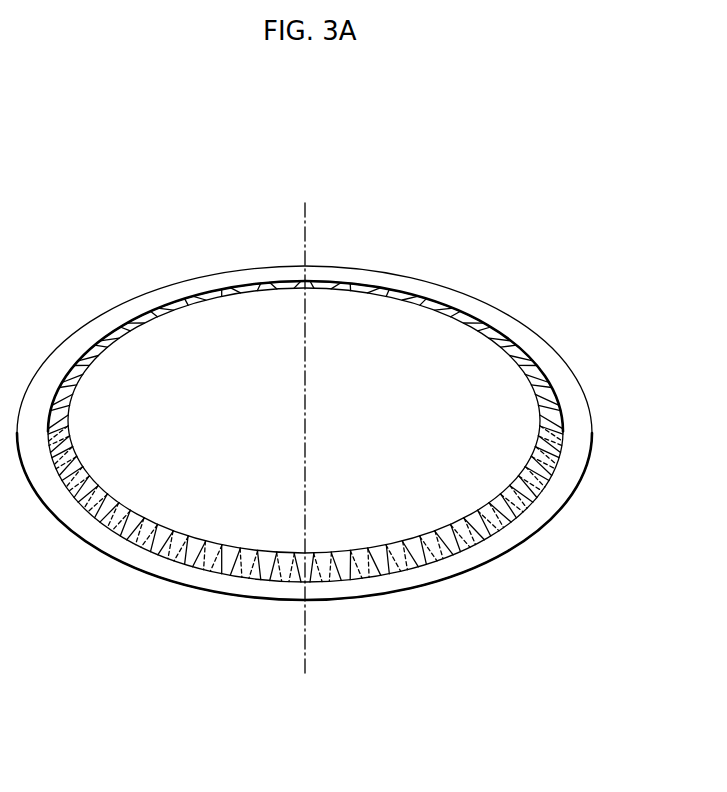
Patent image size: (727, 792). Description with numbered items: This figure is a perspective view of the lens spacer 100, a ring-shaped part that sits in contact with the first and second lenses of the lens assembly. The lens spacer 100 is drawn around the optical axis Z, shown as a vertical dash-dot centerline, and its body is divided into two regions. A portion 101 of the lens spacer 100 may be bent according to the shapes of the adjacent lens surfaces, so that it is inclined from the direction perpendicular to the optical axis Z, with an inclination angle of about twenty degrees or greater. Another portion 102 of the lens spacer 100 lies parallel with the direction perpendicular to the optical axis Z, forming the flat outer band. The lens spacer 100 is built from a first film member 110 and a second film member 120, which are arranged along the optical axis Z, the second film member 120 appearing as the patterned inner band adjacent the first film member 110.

The lens spacer 100 is at (548, 243).
The portion 101 is at (546, 383).
The another portion 102 is at (573, 405).
The first film member 110 is at (329, 459).
The second film member 120 is at (397, 560).
The optical axis Z is at (306, 234).